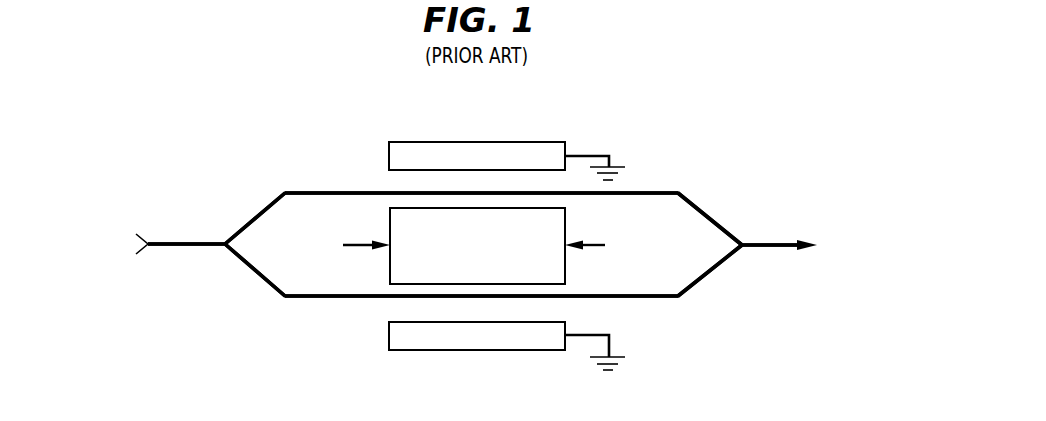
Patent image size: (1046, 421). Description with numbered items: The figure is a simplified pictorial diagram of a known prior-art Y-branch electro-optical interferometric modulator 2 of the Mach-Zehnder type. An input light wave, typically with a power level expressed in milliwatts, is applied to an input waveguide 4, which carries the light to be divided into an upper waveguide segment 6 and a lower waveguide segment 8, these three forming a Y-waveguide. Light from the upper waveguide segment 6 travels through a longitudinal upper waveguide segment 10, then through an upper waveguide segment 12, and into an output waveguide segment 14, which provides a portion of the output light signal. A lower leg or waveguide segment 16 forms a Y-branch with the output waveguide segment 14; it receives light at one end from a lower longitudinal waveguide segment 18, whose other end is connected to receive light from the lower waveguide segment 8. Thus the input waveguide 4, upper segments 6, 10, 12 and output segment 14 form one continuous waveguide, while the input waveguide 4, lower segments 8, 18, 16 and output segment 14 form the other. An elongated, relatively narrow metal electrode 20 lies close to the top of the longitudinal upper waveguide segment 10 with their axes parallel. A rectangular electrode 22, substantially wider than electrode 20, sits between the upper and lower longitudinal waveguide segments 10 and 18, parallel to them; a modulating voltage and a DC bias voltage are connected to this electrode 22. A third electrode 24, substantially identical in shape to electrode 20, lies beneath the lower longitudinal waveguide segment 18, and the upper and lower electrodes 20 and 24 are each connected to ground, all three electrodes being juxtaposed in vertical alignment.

The Y-branch electro-optical interferometric modulator 2 is at (603, 99).
The input waveguide 4 is at (177, 242).
The upper waveguide segment 6 is at (257, 212).
The lower waveguide segment 8 is at (247, 268).
The longitudinal upper waveguide segment 10 is at (651, 193).
The upper waveguide segment 12 is at (705, 212).
The output waveguide segment 14 is at (763, 242).
The lower leg or waveguide segment 16 is at (710, 272).
The lower longitudinal waveguide segment 18 is at (635, 298).
The metal electrode 20 is at (402, 141).
The electrode 22 is at (390, 223).
The third electrode 24 is at (403, 352).